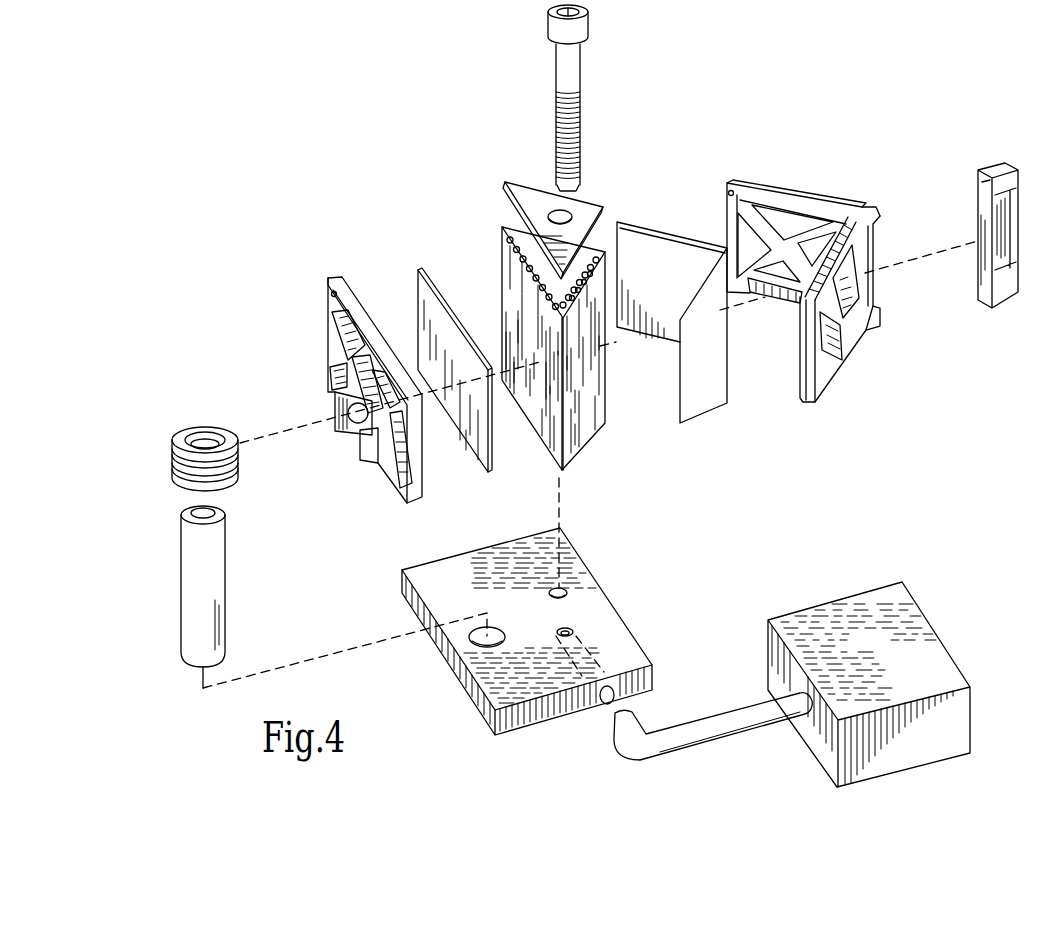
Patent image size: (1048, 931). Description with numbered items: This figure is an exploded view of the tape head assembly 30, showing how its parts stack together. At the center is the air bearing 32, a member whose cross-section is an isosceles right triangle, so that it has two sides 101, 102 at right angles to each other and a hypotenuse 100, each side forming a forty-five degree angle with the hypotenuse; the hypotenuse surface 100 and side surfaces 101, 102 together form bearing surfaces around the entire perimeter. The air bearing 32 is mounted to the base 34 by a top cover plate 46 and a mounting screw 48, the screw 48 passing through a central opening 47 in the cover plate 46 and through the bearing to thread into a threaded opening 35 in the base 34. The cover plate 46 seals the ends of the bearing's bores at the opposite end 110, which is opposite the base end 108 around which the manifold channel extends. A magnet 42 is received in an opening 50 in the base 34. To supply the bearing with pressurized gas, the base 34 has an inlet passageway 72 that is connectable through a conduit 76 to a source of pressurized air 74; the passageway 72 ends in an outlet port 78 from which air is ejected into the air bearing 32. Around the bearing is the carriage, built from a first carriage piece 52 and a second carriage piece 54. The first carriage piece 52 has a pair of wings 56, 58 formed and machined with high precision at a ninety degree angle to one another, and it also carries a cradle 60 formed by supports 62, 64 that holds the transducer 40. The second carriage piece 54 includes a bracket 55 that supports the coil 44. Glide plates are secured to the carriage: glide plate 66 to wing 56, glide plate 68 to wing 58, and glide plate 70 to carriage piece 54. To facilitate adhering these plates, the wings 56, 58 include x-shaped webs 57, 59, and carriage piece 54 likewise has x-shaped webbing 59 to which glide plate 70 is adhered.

The tape head assembly 30 is at (752, 106).
The air bearing 32 is at (564, 351).
The base 34 is at (543, 655).
The threaded opening 35 is at (545, 258).
The transducer 40 is at (978, 188).
The magnet 42 is at (195, 587).
The coil 44 is at (200, 428).
The top cover plate 46 is at (554, 211).
The central opening 47 is at (555, 212).
The mounting screw 48 is at (573, 72).
The opening 50 is at (480, 642).
The first carriage piece 52 is at (847, 267).
The second carriage piece 54 is at (306, 399).
The bracket 55 is at (372, 462).
The wing 56 is at (752, 186).
The x-shaped web 57 is at (783, 265).
The wing 58 is at (840, 357).
The x-shaped web 59 is at (333, 372).
The cradle 60 is at (882, 290).
The support 62 is at (876, 232).
The support 64 is at (872, 322).
The glide plate 66 is at (678, 257).
The glide plate 68 is at (700, 373).
The glide plate 70 is at (437, 318).
The inlet passageway 72 is at (600, 660).
The source of pressurized air 74 is at (877, 653).
The conduit 76 is at (705, 742).
The outlet port 78 is at (567, 630).
The hypotenuse 100 is at (540, 417).
The side 101 is at (603, 250).
The side 102 is at (600, 382).
The base end 108 is at (578, 452).
The opposite end 110 is at (520, 237).